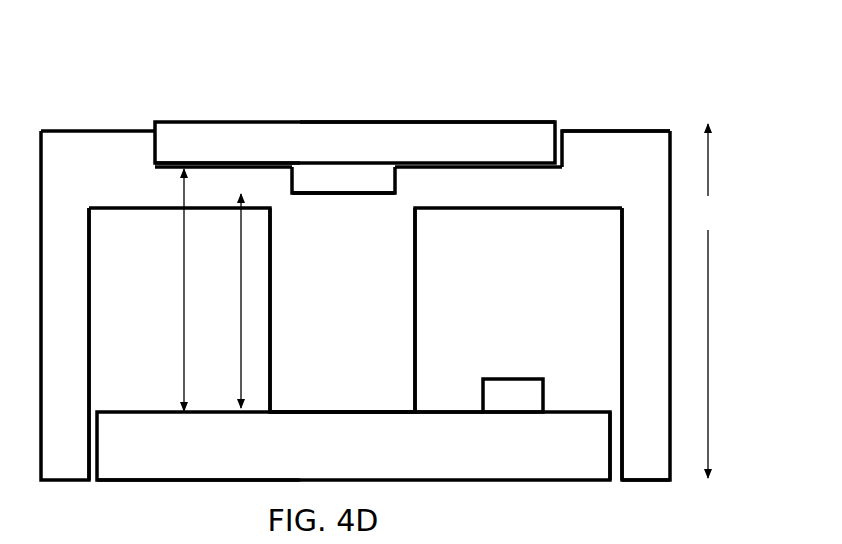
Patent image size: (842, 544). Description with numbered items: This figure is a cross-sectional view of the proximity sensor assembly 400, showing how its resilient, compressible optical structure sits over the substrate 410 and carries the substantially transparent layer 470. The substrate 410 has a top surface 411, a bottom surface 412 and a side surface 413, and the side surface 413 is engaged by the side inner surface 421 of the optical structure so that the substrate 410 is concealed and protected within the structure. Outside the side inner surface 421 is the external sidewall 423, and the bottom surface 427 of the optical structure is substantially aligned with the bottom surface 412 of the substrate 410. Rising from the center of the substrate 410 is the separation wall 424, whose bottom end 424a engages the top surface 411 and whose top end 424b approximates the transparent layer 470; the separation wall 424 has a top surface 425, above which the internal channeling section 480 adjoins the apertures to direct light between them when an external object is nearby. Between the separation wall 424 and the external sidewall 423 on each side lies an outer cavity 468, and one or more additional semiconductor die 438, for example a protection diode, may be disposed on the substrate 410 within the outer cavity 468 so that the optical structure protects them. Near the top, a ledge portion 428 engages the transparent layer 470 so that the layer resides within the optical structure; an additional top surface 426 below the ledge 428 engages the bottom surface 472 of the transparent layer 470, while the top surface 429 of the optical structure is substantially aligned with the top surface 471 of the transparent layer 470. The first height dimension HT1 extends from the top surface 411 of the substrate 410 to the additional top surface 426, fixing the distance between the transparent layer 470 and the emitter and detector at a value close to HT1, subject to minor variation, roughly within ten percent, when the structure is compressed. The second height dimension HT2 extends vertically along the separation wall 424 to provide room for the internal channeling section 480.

The proximity sensor assembly 400 is at (111, 104).
The substrate 410 is at (332, 447).
The top surface of substrate 411 is at (446, 417).
The bottom surface of substrate 412 is at (175, 476).
The side surface of substrate 413 is at (604, 447).
The side inner surface 421 is at (101, 352).
The external sidewall 423 is at (42, 307).
The separation wall 424 is at (356, 332).
The bottom end of separation wall 424a is at (288, 407).
The top end of separation wall 424b is at (325, 252).
The top surface of separation wall 425 is at (346, 196).
The additional top surface 426 is at (509, 171).
The bottom surface of optical structure 427 is at (641, 483).
The ledge portion 428 is at (102, 159).
The top surface of optical structure 429 is at (618, 125).
The additional semiconductor die 438 is at (497, 406).
The outer cavity 468 is at (107, 265).
The substantially transparent layer 470 is at (355, 133).
The top surface of transparent layer 471 is at (505, 116).
The bottom surface of transparent layer 472 is at (258, 160).
The internal channeling section 480 is at (315, 186).
The first height dimension HT1 is at (175, 290).
The second height dimension HT2 is at (232, 301).